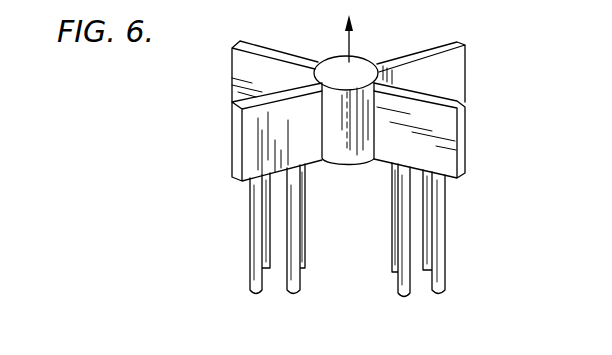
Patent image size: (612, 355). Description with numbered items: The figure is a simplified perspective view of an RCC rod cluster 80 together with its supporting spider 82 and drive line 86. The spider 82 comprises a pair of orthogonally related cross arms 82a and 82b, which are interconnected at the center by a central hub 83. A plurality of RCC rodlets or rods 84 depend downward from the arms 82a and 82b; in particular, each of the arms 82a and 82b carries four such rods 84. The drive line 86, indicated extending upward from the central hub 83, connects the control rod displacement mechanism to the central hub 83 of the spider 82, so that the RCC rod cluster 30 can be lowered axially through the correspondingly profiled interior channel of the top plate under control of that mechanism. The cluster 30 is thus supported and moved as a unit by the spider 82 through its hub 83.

The RCC rod cluster 30 is at (176, 186).
The RCC rod cluster 80 is at (348, 175).
The spider 82 is at (378, 123).
The cross arm 82a is at (288, 19).
The cross arm 82b is at (300, 147).
The central hub 83 is at (337, 147).
The RCC rodlets or rods 84 is at (293, 294).
The drive line 86 is at (352, 46).